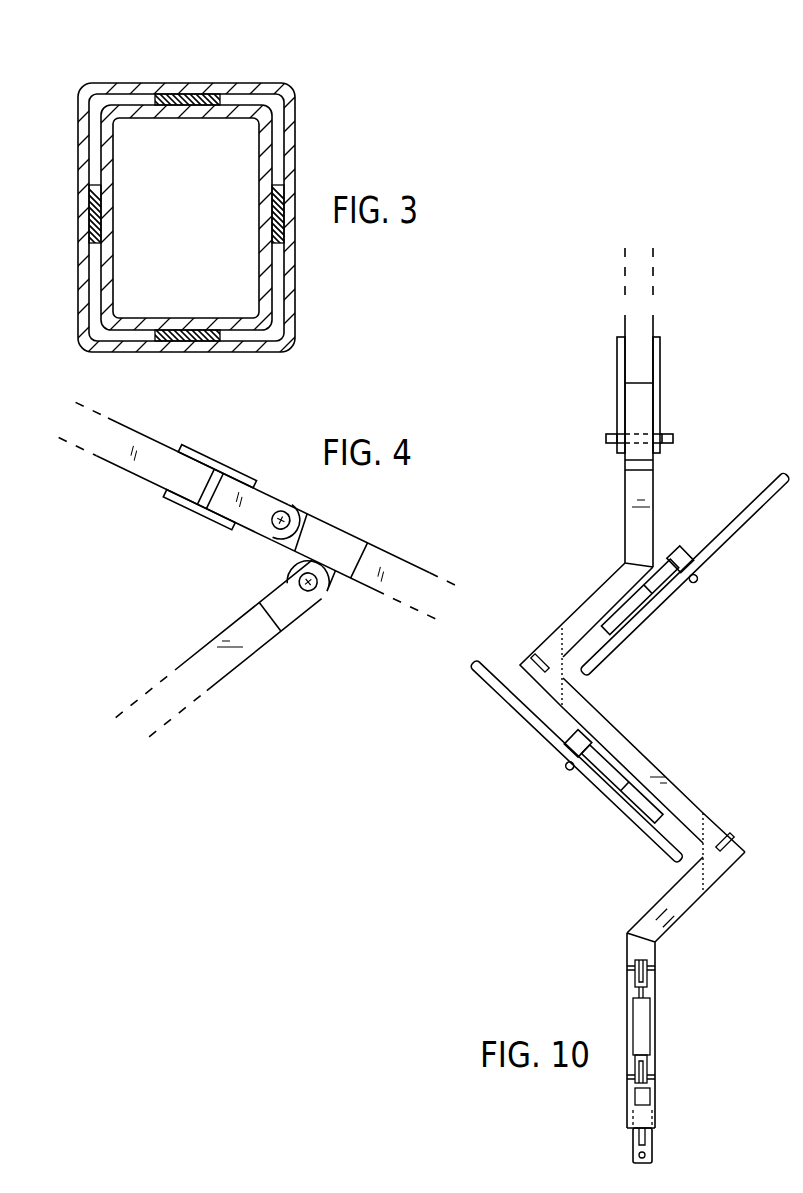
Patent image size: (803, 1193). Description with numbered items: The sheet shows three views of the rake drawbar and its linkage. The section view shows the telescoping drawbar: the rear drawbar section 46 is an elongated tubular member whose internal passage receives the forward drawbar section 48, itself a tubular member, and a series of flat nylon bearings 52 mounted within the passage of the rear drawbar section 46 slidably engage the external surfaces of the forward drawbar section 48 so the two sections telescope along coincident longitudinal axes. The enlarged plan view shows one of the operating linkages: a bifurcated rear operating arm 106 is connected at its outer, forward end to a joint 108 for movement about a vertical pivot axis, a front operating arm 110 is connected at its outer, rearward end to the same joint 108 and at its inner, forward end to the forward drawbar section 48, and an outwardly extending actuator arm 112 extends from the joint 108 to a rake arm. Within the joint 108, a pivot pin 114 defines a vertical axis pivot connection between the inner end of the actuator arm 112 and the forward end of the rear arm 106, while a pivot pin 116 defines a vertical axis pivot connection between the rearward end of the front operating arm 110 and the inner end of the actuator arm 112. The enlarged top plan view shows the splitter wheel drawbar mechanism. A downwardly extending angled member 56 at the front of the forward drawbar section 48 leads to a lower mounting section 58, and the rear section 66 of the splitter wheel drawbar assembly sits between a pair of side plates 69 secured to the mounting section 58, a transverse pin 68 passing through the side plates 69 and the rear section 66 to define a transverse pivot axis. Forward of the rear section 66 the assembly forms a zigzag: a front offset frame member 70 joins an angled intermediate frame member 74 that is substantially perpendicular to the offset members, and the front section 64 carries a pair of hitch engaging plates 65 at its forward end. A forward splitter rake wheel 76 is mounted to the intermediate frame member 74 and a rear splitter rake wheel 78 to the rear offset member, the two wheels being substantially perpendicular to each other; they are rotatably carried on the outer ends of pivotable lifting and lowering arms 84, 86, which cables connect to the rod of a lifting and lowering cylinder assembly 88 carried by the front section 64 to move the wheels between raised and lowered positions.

In FIG. 3, the rear drawbar section 46 is at (237, 83).
In FIG. 3, the forward drawbar section 48 is at (272, 175).
In FIG. 3, the flat nylon bearings 52 is at (155, 98).
In FIG. 4, the rear operating arm 106 is at (138, 475).
In FIG. 4, the joint 108 is at (208, 597).
In FIG. 4, the front operating arm 110 is at (236, 669).
In FIG. 4, the actuator arm 112 is at (387, 547).
In FIG. 4, the pivot pin 114 is at (284, 507).
In FIG. 4, the pivot pin 116 is at (321, 588).
In FIG. 10, the angled member 56 is at (655, 322).
In FIG. 10, the mounting section 58 is at (643, 410).
In FIG. 10, the front section 64 is at (655, 1028).
In FIG. 10, the hitch engaging plates 65 is at (630, 1153).
In FIG. 10, the rear section 66 is at (626, 530).
In FIG. 10, the transverse pin 68 is at (675, 439).
In FIG. 10, the side plates 69 is at (662, 373).
In FIG. 10, the front offset frame member 70 is at (692, 908).
In FIG. 10, the intermediate frame member 74 is at (640, 747).
In FIG. 10, the forward splitter rake wheel 76 is at (510, 712).
In FIG. 10, the rear splitter rake wheel 78 is at (743, 528).
In FIG. 10, the lifting and lowering arm 84 is at (622, 800).
In FIG. 10, the lifting and lowering arm 86 is at (660, 590).
In FIG. 10, the lifting and lowering cylinder assembly 88 is at (624, 1028).